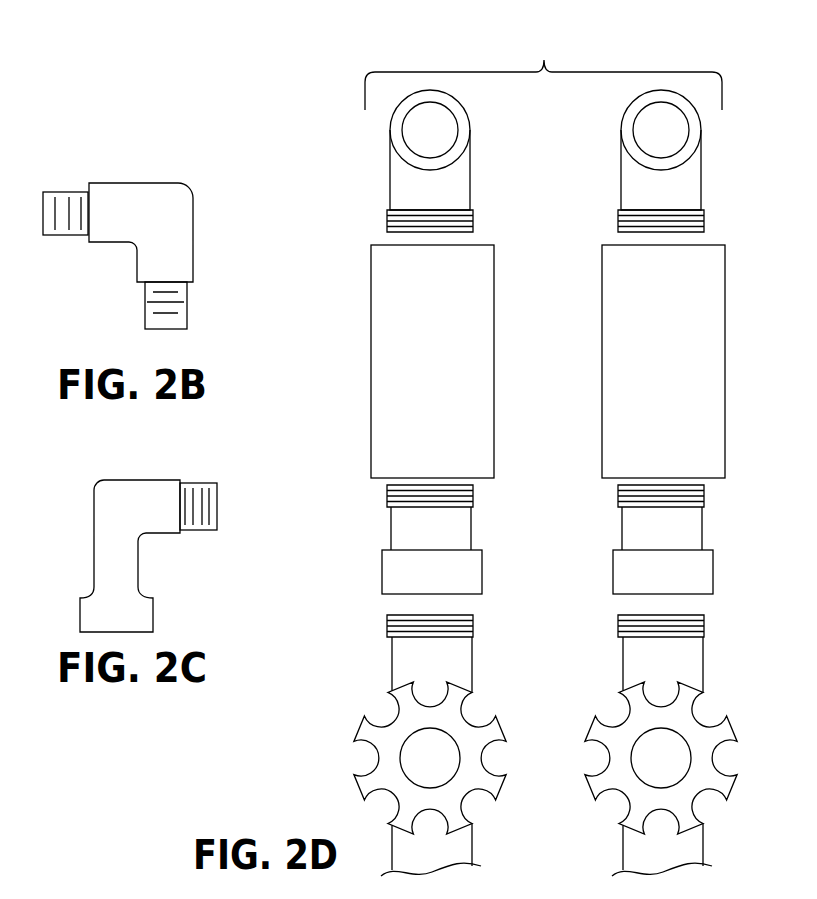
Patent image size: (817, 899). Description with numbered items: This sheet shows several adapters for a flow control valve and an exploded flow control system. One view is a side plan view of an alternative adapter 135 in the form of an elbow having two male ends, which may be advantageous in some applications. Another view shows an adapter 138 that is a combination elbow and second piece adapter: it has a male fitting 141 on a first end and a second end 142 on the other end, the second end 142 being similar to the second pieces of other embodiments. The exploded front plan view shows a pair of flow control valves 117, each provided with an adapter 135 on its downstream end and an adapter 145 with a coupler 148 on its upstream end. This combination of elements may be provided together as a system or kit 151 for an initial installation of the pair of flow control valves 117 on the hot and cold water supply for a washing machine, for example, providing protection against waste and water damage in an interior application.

In FIG. 2B, the adapter 135 is at (138, 206).
In FIG. 2D, the adapter 135 is at (455, 181).
In FIG. 2C, the adapter 138 is at (110, 537).
In FIG. 2C, the male fitting 141 is at (191, 488).
In FIG. 2C, the second end 142 is at (140, 598).
In FIG. 2D, the system or kit 151 is at (543, 74).
In FIG. 2D, the flow control valve 117 is at (478, 279).
In FIG. 2D, the adapter 145 is at (468, 529).
In FIG. 2D, the coupler 148 is at (479, 581).